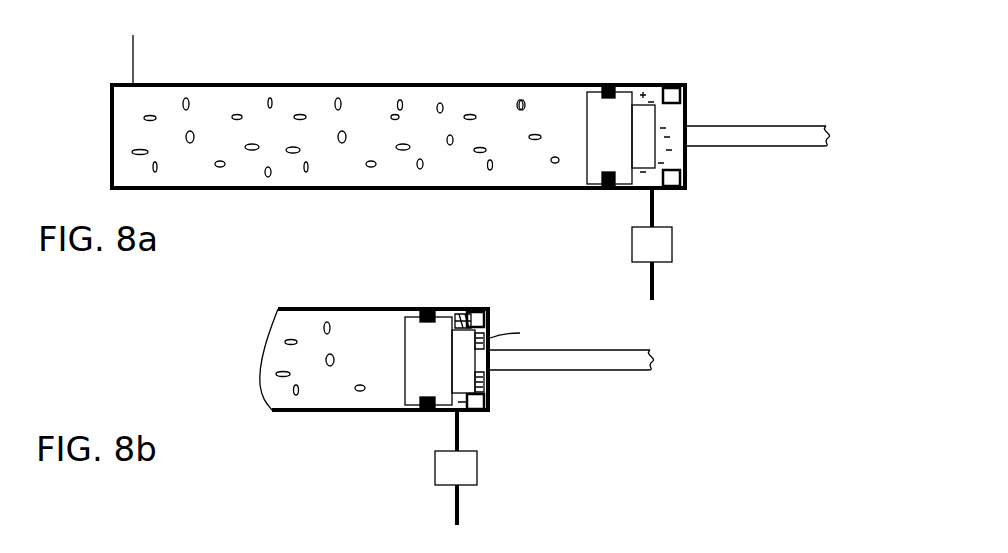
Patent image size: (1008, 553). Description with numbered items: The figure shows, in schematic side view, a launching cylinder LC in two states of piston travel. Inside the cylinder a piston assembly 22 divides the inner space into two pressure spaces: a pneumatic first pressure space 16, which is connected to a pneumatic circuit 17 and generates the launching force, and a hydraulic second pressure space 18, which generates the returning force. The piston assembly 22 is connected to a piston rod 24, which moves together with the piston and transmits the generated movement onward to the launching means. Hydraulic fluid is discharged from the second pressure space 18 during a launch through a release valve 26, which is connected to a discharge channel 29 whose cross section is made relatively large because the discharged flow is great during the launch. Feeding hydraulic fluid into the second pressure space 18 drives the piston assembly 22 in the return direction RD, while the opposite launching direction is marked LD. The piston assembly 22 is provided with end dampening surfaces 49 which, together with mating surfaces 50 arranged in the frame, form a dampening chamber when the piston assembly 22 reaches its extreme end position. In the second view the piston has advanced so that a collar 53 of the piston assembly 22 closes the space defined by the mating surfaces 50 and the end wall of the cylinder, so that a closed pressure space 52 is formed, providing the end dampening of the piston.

In FIG. 8a, the first pressure space 16 is at (290, 165).
In FIG. 8b, the first pressure space 16 is at (325, 388).
In FIG. 8a, the pneumatic circuit 17 is at (134, 70).
In FIG. 8a, the second pressure space 18 is at (643, 92).
In FIG. 8a, the piston assembly 22 is at (560, 119).
In FIG. 8b, the piston assembly 22 is at (388, 334).
In FIG. 8a, the piston rod 24 is at (796, 140).
In FIG. 8b, the piston rod 24 is at (622, 365).
In FIG. 8a, the release valve 26 is at (614, 258).
In FIG. 8b, the release valve 26 is at (415, 483).
In FIG. 8a, the discharge channel 29 is at (655, 210).
In FIG. 8a, the end dampening surface 49 is at (643, 157).
In FIG. 8b, the end dampening surface 49 is at (463, 322).
In FIG. 8a, the mating surface 50 is at (688, 118).
In FIG. 8b, the closed pressure space 52 is at (490, 378).
In FIG. 8a, the collar 53 is at (637, 190).
In FIG. 8b, the collar 53 is at (459, 328).
In FIG. 8a, the launching cylinder LC is at (570, 60).
In FIG. 8a, the return direction RD is at (808, 48).
In FIG. 8a, the left direction LD is at (889, 48).